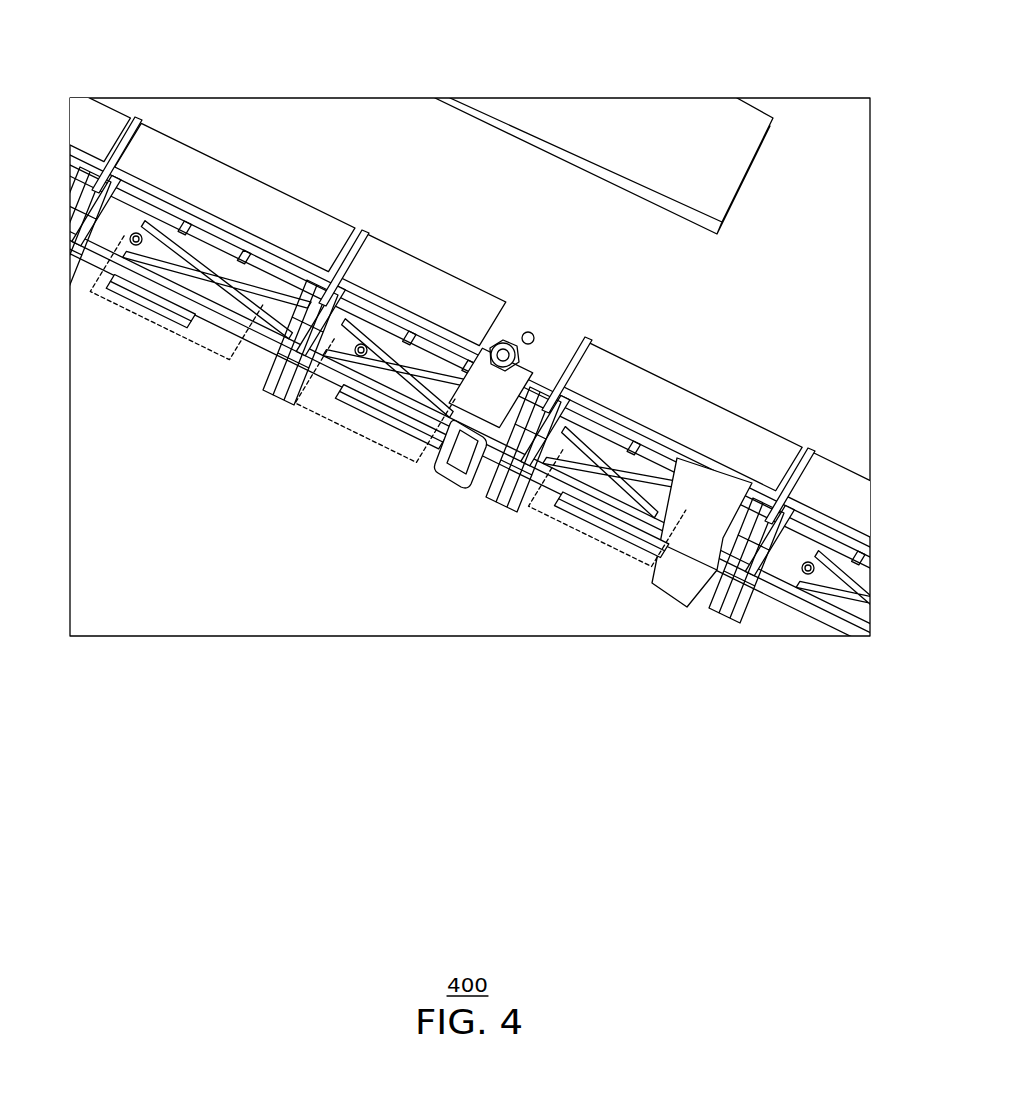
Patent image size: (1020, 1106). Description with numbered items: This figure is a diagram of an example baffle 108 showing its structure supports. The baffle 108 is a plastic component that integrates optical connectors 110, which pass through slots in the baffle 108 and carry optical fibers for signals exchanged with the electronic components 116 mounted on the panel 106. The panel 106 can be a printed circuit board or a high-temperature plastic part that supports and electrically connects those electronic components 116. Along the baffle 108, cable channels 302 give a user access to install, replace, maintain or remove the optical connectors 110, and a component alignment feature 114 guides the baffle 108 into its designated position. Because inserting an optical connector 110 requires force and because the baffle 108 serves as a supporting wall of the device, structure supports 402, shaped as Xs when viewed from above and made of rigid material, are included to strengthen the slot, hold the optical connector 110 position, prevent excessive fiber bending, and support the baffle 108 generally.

The panel 106 is at (813, 150).
The baffle 108 is at (155, 187).
The optical connector 110 is at (300, 405).
The component alignment feature 114 is at (120, 262).
The electronic components 116 is at (733, 216).
The cable channel 302 is at (112, 150).
The structure support 402 is at (186, 353).